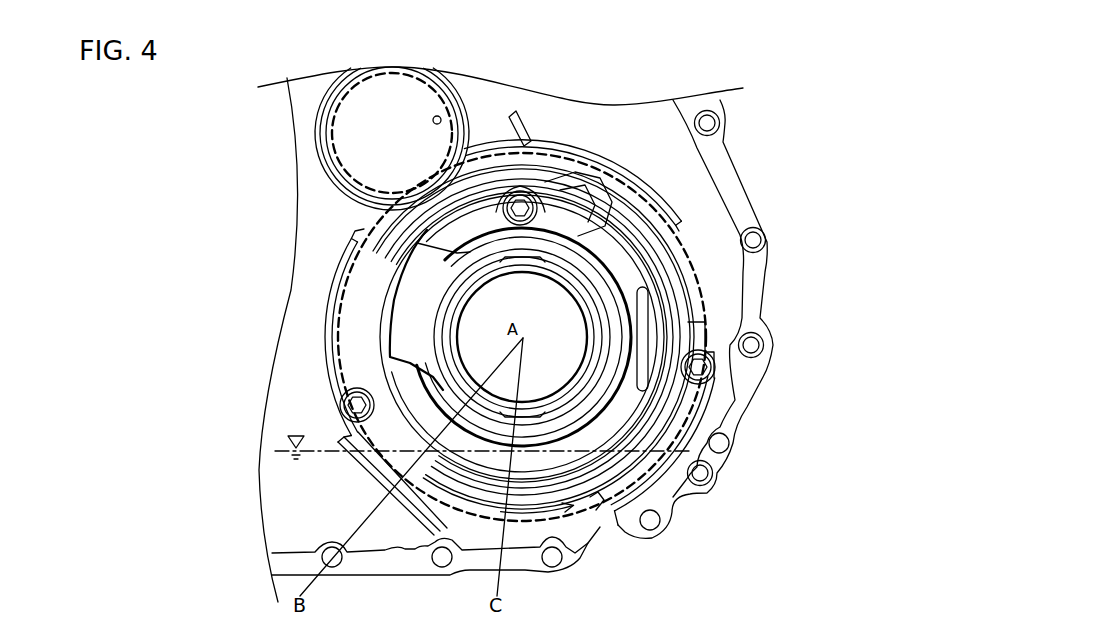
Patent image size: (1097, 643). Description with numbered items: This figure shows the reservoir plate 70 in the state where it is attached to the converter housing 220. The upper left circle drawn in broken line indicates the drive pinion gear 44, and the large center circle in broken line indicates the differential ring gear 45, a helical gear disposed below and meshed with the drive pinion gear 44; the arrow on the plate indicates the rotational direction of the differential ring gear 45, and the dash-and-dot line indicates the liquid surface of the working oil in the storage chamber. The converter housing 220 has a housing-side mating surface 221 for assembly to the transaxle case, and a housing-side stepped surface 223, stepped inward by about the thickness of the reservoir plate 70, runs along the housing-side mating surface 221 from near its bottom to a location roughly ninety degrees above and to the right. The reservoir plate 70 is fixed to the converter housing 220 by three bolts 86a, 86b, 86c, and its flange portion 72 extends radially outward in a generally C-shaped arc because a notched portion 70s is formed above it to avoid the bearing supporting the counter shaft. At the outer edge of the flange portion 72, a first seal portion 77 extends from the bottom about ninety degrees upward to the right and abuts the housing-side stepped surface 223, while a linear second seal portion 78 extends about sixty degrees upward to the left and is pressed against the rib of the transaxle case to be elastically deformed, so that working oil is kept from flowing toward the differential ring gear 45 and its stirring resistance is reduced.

The drive pinion gear 44 is at (316, 138).
The differential ring gear 45 is at (327, 303).
The reservoir plate 70 is at (333, 258).
The notched portion 70s is at (437, 223).
The flange portion 72 is at (357, 353).
The first seal portion 77 is at (597, 520).
The second seal portion 78 is at (380, 474).
The bolt 86a is at (523, 207).
The bolt 86b is at (718, 360).
The bolt 86c is at (343, 415).
The converter housing 220 is at (690, 510).
The housing-side mating surface 221 is at (627, 525).
The housing-side stepped surface 223 is at (580, 530).